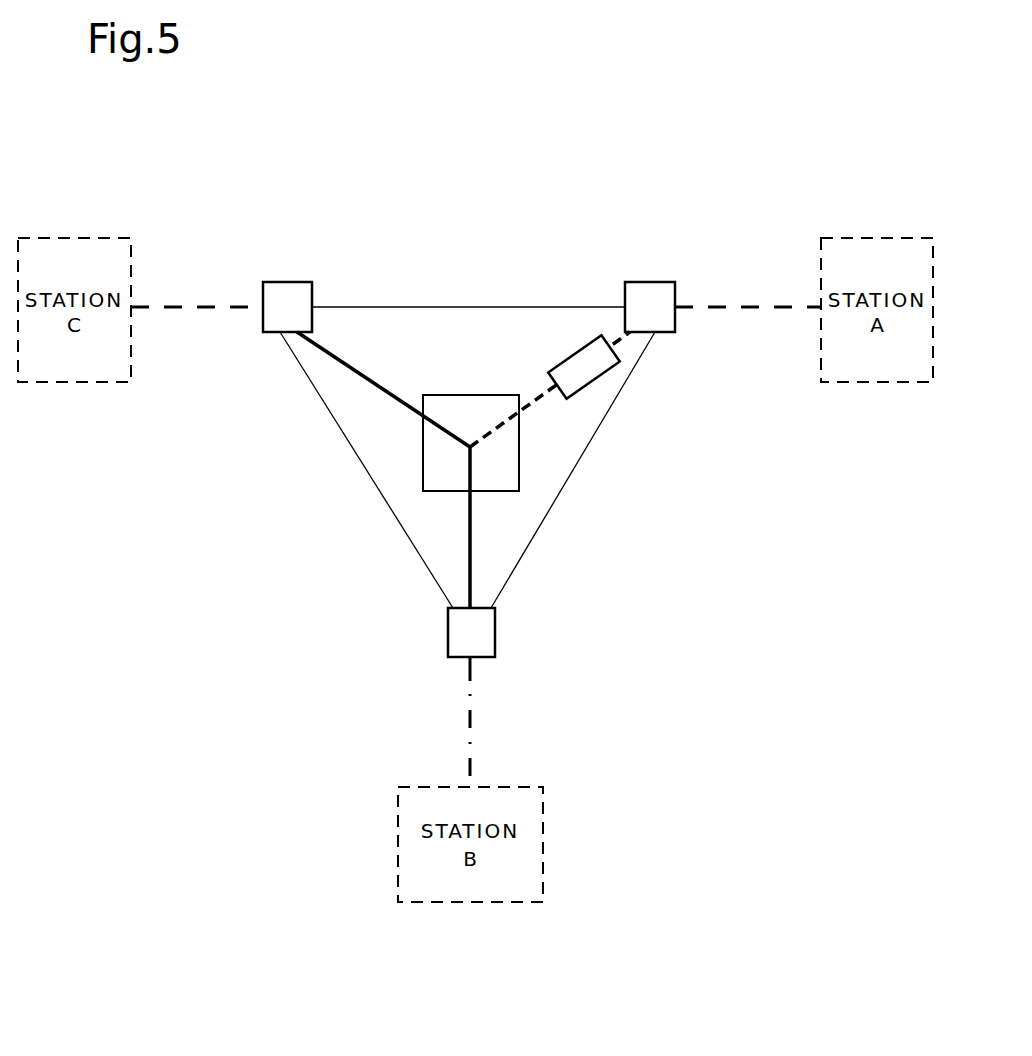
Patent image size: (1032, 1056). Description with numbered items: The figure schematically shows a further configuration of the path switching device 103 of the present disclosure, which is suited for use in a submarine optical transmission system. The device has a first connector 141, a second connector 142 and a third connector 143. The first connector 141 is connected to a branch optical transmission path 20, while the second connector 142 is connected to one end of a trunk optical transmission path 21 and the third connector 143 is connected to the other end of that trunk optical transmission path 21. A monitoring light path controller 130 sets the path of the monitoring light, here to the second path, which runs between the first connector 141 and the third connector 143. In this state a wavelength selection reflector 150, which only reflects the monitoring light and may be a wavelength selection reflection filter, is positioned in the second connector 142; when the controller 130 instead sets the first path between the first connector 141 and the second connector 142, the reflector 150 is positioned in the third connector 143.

The path switching device 103 is at (486, 213).
The monitoring light path controller 130 is at (488, 395).
The first connector 141 is at (495, 640).
The second connector 142 is at (652, 282).
The third connector 143 is at (290, 282).
The wavelength selection reflector 150 is at (569, 357).
The branch optical transmission path 20 is at (478, 716).
The trunk optical transmission path 21 is at (173, 305).